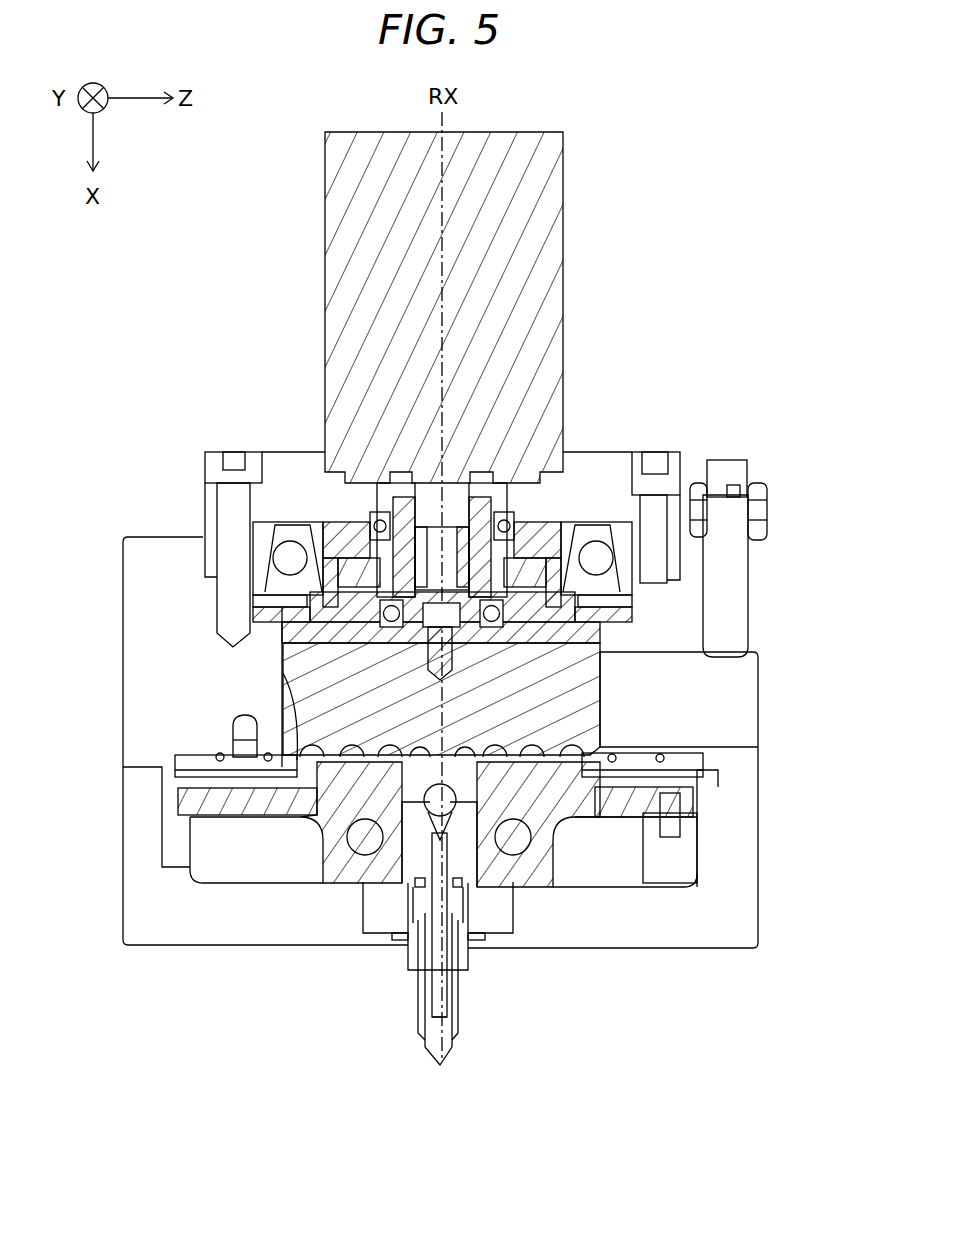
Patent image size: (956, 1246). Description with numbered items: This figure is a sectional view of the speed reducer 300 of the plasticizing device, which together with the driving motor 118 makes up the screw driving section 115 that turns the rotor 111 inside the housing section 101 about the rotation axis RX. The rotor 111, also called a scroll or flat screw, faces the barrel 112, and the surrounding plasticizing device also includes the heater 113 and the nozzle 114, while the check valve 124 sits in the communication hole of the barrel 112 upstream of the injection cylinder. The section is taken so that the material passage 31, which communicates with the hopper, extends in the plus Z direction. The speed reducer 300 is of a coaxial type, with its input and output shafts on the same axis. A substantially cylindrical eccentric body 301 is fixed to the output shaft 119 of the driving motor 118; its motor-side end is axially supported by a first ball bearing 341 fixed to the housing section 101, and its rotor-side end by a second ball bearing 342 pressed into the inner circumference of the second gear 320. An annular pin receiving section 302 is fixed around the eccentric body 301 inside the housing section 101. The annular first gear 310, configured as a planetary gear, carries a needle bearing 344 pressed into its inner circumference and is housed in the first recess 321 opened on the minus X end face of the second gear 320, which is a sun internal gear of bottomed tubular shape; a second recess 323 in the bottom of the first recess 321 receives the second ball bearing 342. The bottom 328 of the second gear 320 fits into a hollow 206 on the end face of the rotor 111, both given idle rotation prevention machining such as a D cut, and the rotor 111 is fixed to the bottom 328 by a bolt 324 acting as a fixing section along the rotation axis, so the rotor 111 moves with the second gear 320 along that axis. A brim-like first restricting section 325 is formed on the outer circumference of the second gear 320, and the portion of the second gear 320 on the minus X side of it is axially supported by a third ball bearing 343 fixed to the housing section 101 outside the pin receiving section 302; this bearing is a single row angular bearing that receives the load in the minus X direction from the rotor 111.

The screw driving section 115 is at (128, 287).
The driving motor 118 is at (325, 312).
The speed reducer 300 is at (241, 392).
The output shaft 119 is at (255, 520).
The pin receiving section 302 is at (305, 520).
The eccentric body 301 is at (323, 558).
The needle bearing 344 is at (253, 597).
The housing section 101 is at (163, 598).
The hollow 206 is at (318, 628).
The second ball bearing 342 is at (282, 672).
The rotor 111 is at (282, 700).
The bottom 328 is at (232, 722).
The barrel 112 is at (282, 735).
The first gear 310 is at (580, 520).
The first ball bearing 341 is at (560, 487).
The first recess 321 is at (610, 530).
The third ball bearing 343 is at (618, 555).
The second gear 320 is at (690, 573).
The first restricting section 325 is at (627, 623).
The second recess 323 is at (600, 673).
The bolt 324 is at (600, 693).
The material passage 31 is at (735, 745).
The heater 113 is at (340, 855).
The check valve 124 is at (402, 850).
The nozzle 114 is at (445, 1062).